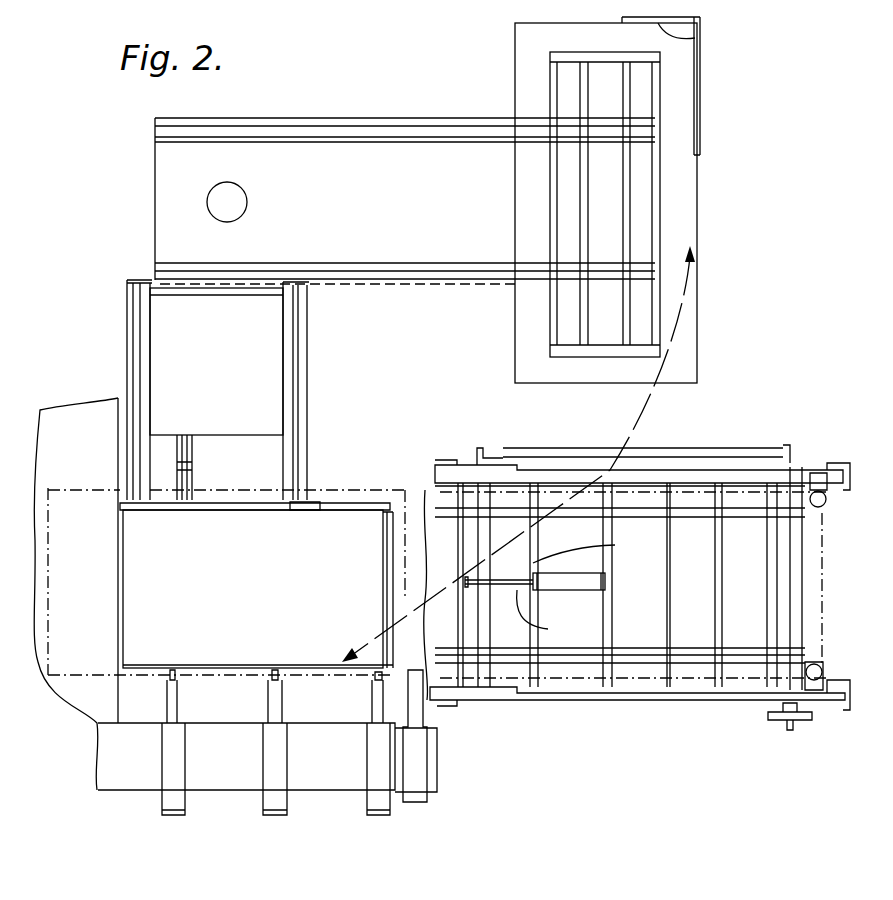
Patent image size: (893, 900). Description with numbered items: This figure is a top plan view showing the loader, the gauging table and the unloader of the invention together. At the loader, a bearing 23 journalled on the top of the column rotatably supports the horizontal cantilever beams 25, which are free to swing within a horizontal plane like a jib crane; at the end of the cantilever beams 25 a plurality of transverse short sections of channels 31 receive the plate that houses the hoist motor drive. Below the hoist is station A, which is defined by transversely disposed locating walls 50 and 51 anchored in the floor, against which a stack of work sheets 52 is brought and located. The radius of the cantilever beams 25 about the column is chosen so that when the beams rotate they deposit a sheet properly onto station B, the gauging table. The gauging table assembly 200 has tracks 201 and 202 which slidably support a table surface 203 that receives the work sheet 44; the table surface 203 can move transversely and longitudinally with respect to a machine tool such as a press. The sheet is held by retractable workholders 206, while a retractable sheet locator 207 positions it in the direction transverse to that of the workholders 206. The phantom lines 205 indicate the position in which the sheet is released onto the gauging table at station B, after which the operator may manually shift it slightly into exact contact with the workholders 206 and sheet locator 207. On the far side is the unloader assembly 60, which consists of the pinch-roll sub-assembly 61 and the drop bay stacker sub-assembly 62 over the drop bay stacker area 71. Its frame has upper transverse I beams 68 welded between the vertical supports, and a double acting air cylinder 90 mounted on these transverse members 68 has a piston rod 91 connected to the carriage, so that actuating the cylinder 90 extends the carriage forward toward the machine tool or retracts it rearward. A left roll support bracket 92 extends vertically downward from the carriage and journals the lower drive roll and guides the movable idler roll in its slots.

The cantilever beams 25 is at (390, 119).
The bearing 23 is at (229, 201).
The channels 31 is at (552, 192).
The locating wall 50 is at (700, 26).
The locating wall 51 is at (700, 83).
The stack of work sheets 52 is at (682, 193).
The track 201 is at (127, 358).
The track 202 is at (307, 420).
The gauging table assembly 200 is at (256, 551).
The table surface 203 is at (256, 585).
The work sheet 44 is at (76, 594).
The phantom lines 205 is at (88, 619).
The retractable workholders 206 is at (377, 763).
The retractable sheet locator 207 is at (413, 778).
The unloader assembly 60 is at (621, 643).
The drop bay stacker area 71 is at (640, 587).
The drop bay stacker sub-assembly 62 is at (833, 594).
The pinch-roll sub-assembly 61 is at (455, 500).
The upper transverse I beams 68 is at (589, 549).
The double acting air cylinder 90 is at (577, 583).
The piston rod 91 is at (548, 613).
The left roll support bracket 92 is at (465, 583).